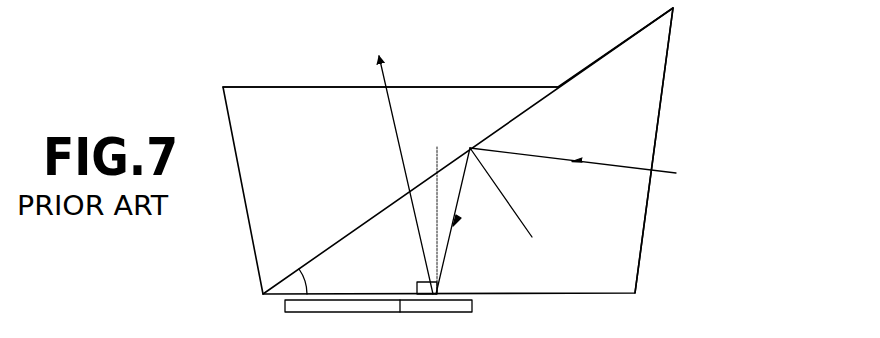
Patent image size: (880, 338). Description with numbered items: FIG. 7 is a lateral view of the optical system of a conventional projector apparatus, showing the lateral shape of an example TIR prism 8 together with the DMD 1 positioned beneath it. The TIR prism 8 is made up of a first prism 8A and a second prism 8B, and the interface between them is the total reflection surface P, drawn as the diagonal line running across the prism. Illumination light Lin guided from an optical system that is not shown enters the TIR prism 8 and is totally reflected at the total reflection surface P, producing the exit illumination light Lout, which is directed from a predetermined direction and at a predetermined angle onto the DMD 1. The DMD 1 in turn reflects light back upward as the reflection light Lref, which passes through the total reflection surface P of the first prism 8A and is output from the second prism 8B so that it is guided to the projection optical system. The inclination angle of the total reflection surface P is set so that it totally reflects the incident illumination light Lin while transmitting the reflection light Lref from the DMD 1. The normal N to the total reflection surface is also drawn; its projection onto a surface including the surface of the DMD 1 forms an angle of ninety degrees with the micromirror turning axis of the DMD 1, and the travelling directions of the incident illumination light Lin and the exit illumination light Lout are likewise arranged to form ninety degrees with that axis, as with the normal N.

The TIR prism 8 is at (485, 67).
The first prism 8A is at (640, 217).
The second prism 8B is at (316, 87).
The total reflection surface P is at (366, 222).
The normal to the total reflection surface N is at (521, 216).
The incident illumination light Lin is at (598, 163).
The exit illumination light Lout is at (455, 245).
The reflection light Lref is at (393, 112).
The DMD 1 is at (460, 312).